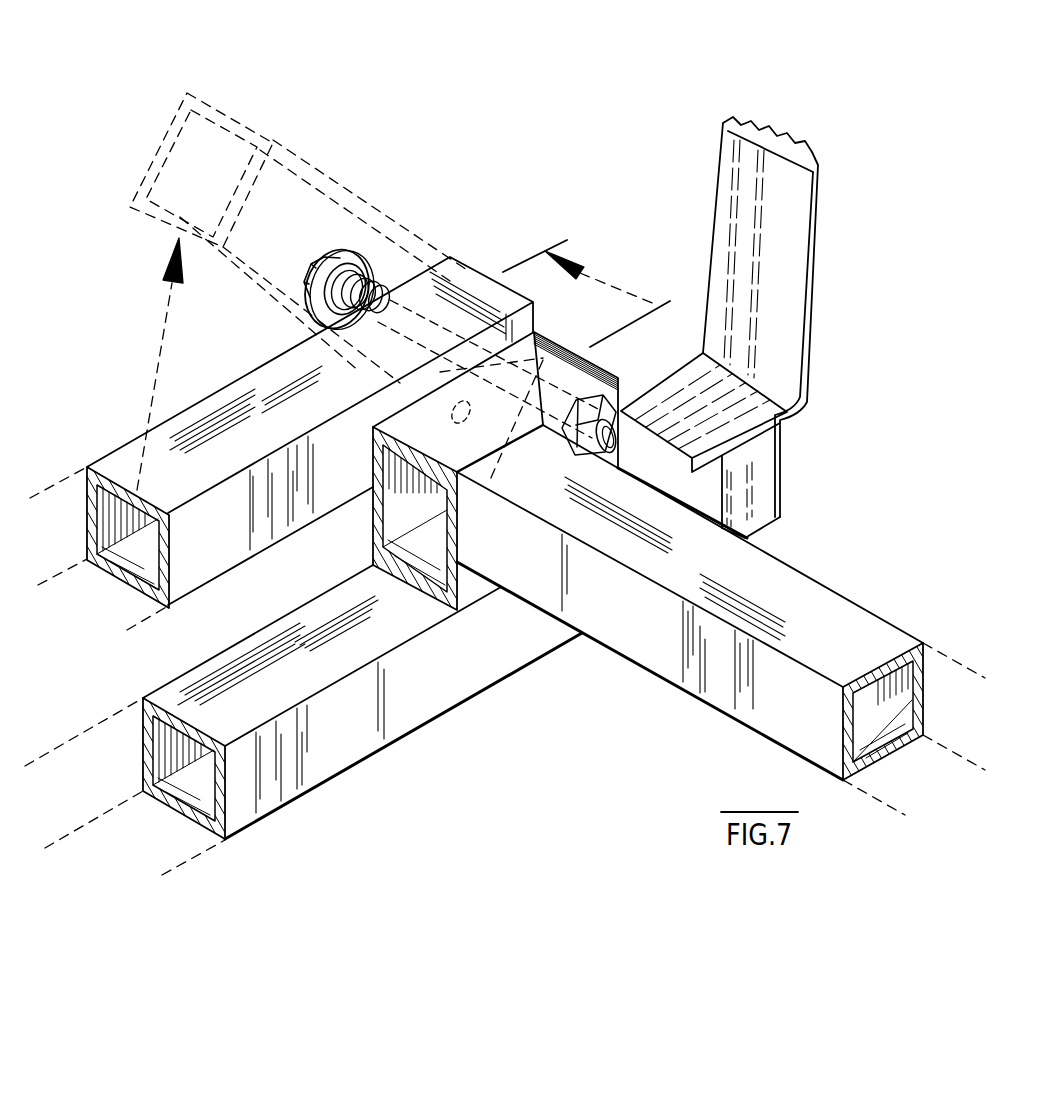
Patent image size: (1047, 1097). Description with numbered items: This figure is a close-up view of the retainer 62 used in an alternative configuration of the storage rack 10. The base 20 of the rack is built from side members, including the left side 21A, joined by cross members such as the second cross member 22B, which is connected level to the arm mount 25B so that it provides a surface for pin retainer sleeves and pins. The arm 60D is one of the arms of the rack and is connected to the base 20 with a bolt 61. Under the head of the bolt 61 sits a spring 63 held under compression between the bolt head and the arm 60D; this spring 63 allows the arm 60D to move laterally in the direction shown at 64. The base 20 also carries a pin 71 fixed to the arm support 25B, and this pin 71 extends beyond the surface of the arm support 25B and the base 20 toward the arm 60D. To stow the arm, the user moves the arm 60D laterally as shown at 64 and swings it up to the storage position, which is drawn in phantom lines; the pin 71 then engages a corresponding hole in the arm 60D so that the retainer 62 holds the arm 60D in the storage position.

The storage rack 10 is at (914, 285).
The base 20 is at (848, 598).
The left side 21A is at (335, 745).
The second cross member 22B is at (887, 633).
The arm mount 25B is at (427, 510).
The arm 60D is at (205, 395).
The bolt 61 is at (327, 262).
The retainer 62 is at (277, 244).
The spring 63 is at (422, 263).
The lateral movement 64 is at (607, 285).
The pin 71 is at (420, 407).